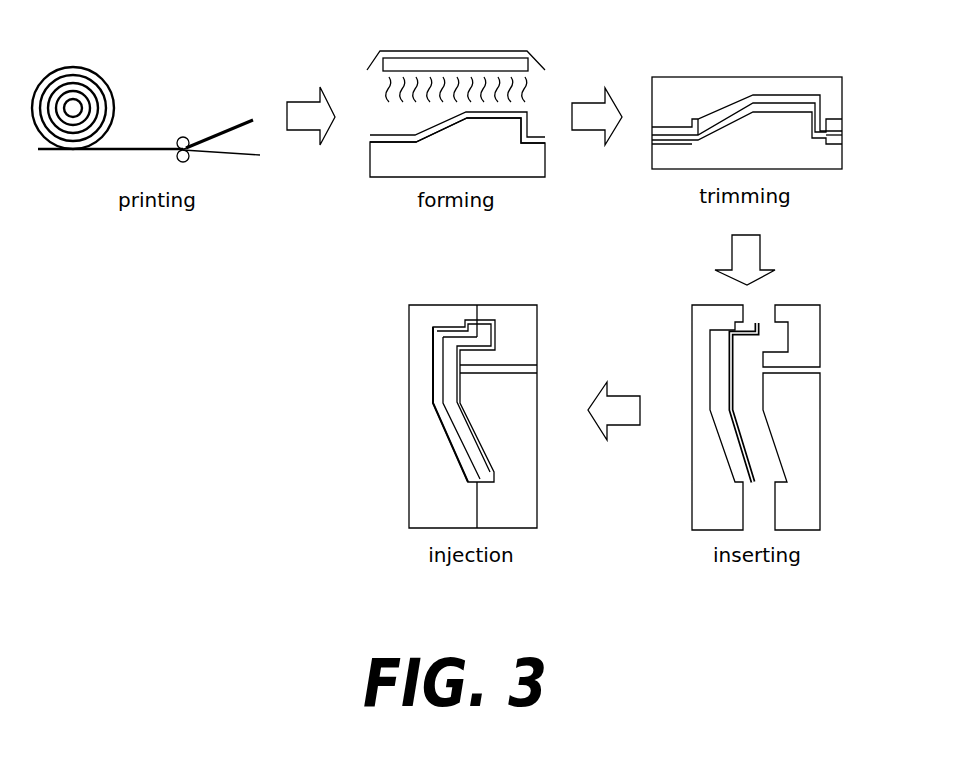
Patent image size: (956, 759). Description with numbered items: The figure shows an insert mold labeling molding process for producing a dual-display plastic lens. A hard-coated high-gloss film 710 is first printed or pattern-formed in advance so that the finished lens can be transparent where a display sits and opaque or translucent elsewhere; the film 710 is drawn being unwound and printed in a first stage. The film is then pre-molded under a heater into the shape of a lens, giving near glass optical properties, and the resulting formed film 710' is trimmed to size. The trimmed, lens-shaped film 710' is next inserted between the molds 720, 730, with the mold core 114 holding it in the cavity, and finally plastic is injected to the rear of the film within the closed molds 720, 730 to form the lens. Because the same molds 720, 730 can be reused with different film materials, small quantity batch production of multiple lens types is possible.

The high-gloss film 710 is at (219, 105).
The formed film 710' is at (489, 107).
The mold core 114 is at (748, 458).
The mold 720 is at (415, 527).
The mold 730 is at (528, 527).